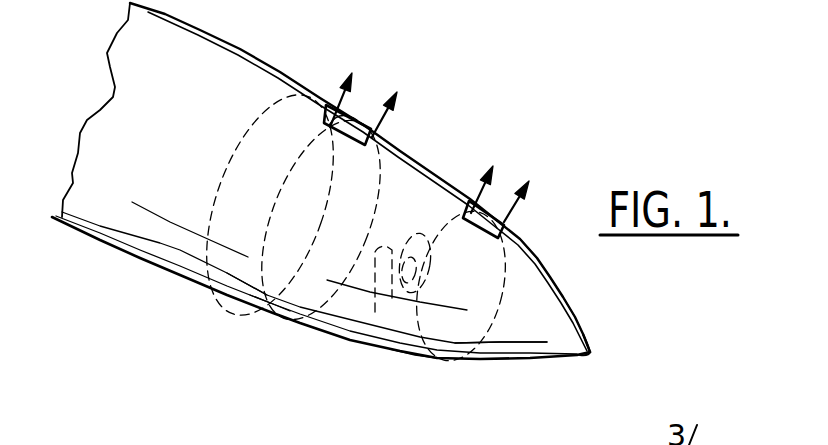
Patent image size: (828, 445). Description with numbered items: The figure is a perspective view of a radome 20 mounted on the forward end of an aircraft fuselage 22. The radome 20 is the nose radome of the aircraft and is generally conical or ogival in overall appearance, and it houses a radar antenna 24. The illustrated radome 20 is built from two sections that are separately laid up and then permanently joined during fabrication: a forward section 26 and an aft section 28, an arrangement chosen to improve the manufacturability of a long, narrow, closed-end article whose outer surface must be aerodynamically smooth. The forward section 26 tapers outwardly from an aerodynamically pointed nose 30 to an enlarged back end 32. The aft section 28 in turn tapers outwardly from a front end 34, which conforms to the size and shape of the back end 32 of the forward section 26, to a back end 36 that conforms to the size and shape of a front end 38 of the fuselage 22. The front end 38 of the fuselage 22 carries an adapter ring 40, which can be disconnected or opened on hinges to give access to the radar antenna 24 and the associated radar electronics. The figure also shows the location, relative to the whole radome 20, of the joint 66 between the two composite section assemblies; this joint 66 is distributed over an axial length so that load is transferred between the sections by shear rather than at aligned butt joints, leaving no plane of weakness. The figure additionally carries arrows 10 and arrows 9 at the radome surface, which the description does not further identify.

The radome 20 is at (352, 222).
The aft section 28 is at (411, 158).
The forward section 26 is at (554, 281).
The nose 30 is at (592, 353).
The aircraft fuselage 22 is at (118, 227).
The adapter ring 40 is at (247, 285).
The front end of fuselage 38 is at (270, 315).
The back end of aft section 36 is at (292, 326).
The front end of aft section 34 is at (415, 357).
The back end of forward section 32 is at (447, 355).
The radar antenna 24 is at (421, 203).
The flow direction arrow 10 is at (371, 97).
The joint 66 is at (500, 217).
The flow direction arrow 9 is at (501, 188).